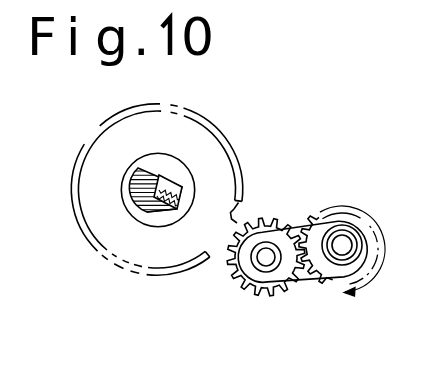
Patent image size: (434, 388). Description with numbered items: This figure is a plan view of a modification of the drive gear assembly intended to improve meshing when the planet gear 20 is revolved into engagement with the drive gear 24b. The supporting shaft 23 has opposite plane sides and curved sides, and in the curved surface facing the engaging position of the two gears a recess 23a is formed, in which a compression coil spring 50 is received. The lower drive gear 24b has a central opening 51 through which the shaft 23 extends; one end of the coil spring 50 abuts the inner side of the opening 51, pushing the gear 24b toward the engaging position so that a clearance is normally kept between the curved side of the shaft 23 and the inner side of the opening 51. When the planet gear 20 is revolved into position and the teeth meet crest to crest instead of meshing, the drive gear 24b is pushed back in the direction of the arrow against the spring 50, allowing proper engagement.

The planet gear 20 is at (278, 292).
The supporting shaft 23 is at (147, 172).
The recess 23a is at (160, 210).
The drive gear 24b is at (247, 207).
The compression coil spring 50 is at (165, 185).
The central opening 51 is at (183, 195).